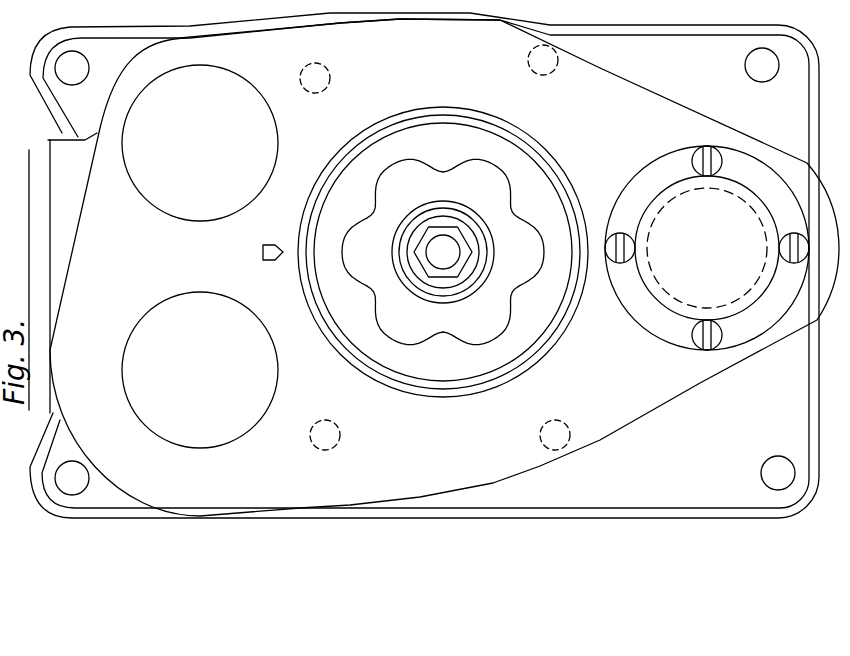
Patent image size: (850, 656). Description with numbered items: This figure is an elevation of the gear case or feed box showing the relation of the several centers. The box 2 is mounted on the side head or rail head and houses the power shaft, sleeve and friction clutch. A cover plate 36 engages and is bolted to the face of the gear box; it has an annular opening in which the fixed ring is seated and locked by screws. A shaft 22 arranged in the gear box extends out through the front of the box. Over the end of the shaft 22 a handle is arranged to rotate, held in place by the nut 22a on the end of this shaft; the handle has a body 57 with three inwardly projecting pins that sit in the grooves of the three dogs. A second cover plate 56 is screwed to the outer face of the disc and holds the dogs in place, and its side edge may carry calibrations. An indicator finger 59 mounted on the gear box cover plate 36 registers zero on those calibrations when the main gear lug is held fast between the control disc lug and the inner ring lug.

The box 2 is at (718, 483).
The cover plate 36 is at (600, 440).
The cover plate 56 is at (355, 155).
The handle body 57 is at (447, 335).
The shaft 22 is at (453, 247).
The nut 22a is at (437, 228).
The indicator finger 59 is at (277, 245).